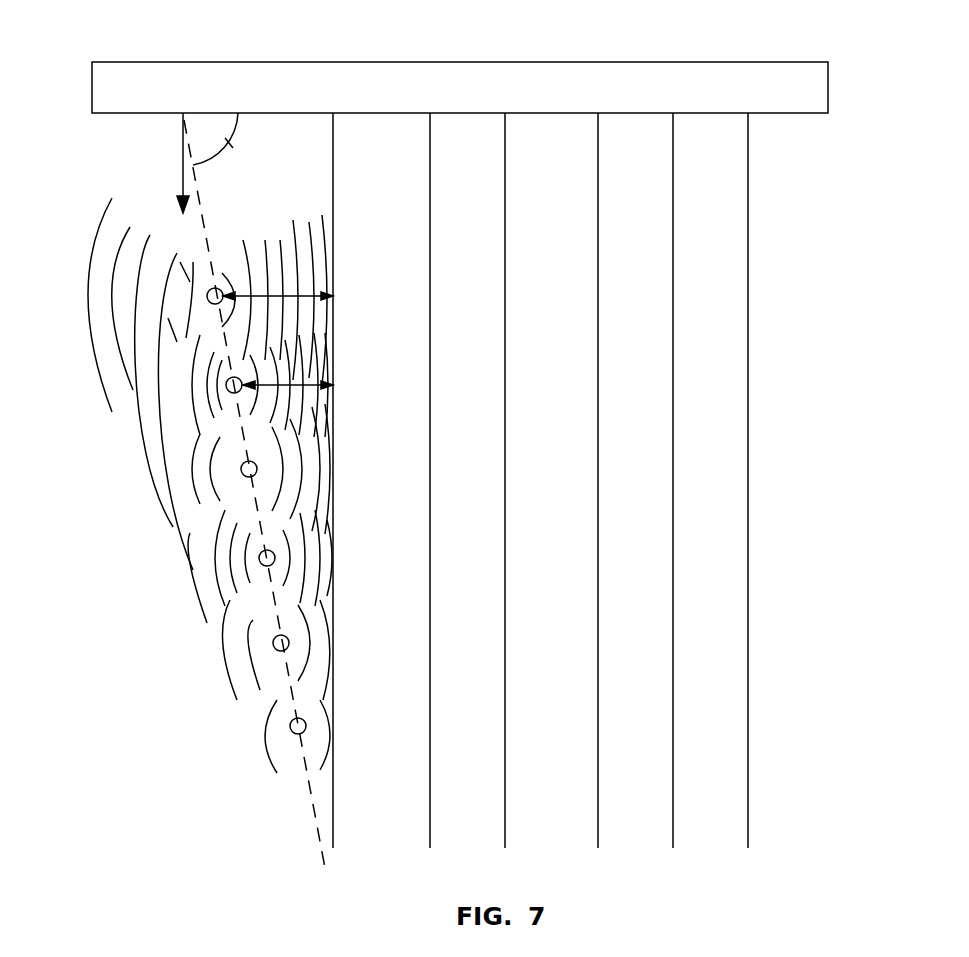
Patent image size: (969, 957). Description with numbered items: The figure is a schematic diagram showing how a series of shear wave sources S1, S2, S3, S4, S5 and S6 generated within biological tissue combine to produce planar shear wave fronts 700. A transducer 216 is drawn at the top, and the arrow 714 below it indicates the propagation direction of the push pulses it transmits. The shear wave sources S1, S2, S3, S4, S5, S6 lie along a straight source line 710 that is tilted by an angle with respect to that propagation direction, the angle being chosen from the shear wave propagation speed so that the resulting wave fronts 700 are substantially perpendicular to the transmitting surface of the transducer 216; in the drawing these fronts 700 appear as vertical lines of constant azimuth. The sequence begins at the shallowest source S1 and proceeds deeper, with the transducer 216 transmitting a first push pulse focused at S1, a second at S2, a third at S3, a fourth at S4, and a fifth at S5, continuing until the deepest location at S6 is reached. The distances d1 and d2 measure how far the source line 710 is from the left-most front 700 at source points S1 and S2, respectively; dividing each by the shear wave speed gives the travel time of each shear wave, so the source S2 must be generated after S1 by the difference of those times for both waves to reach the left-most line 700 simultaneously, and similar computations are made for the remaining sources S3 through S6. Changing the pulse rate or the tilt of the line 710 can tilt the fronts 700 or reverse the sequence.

The transducer 216 is at (393, 62).
The planar shear wave front 700 is at (333, 163).
The arrow indicating propagation direction 714 is at (182, 176).
The straight line 710 is at (320, 810).
The distance from source line at S1 to left-most line d1 is at (278, 249).
The distance from source line at S2 to left-most line d2 is at (305, 408).
The shear wave source S1 is at (208, 292).
The shear wave source S2 is at (228, 382).
The shear wave source S3 is at (241, 467).
The shear wave source S4 is at (259, 555).
The shear wave source S5 is at (273, 640).
The shear wave source S6 is at (290, 723).